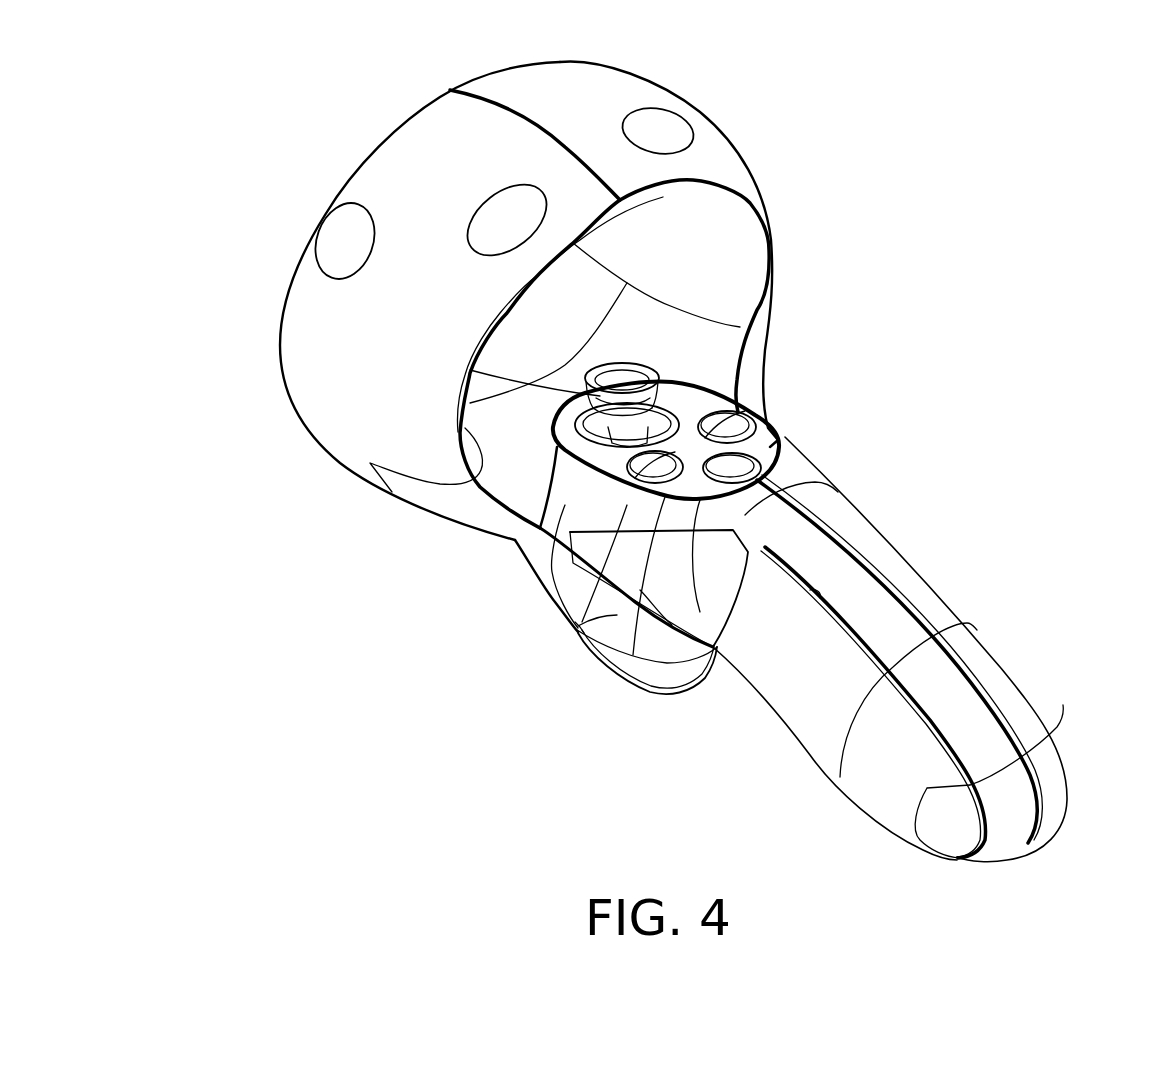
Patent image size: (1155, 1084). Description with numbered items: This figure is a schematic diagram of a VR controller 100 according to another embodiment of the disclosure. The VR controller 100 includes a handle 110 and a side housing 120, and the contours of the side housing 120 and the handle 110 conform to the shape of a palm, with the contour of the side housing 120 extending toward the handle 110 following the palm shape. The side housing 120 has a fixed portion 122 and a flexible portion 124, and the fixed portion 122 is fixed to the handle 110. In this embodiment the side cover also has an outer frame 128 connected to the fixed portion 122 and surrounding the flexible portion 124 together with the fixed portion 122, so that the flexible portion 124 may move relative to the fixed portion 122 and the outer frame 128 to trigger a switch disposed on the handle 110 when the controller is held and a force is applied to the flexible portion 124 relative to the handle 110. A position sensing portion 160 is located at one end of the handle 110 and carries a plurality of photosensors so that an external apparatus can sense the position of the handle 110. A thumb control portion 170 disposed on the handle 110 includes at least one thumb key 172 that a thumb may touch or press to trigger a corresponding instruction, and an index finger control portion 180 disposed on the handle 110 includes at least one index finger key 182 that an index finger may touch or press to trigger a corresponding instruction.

The VR controller 100 is at (975, 223).
The handle 110 is at (910, 588).
The side housing 120 is at (1030, 890).
The fixed portion 122 is at (577, 630).
The flexible portion 124 is at (797, 713).
The outer frame 128 is at (973, 713).
The position sensing portion 160 is at (722, 150).
The thumb control portion 170 is at (778, 428).
The thumb key 172 is at (735, 400).
The index finger control portion 180 is at (619, 713).
The index finger key 182 is at (667, 680).